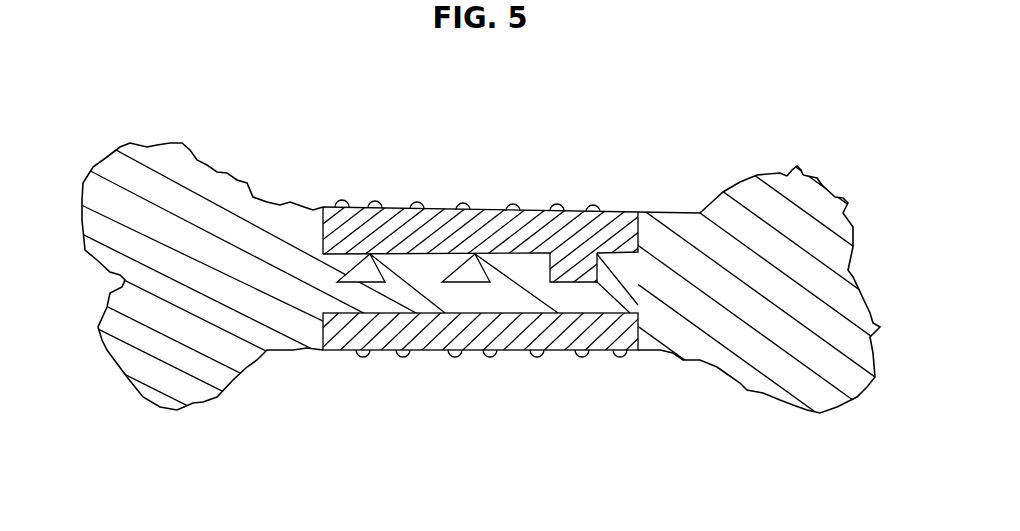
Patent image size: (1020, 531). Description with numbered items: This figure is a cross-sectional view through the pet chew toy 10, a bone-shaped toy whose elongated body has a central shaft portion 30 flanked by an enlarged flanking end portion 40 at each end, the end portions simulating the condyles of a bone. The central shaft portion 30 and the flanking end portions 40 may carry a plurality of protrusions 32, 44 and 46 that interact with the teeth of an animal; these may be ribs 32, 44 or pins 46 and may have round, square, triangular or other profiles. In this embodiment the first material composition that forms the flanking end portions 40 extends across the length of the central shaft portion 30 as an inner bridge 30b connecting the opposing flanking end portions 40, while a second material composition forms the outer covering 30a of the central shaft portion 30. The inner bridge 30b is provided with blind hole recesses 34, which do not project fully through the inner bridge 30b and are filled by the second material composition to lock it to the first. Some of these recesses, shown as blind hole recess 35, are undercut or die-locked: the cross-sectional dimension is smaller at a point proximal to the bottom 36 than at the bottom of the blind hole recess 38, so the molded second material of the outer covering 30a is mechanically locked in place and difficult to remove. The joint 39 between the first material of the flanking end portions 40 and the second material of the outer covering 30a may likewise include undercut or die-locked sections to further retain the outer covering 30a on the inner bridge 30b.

The pet chew toy 10 is at (262, 113).
The central shaft portion 30 is at (478, 388).
The outer covering 30a is at (520, 332).
The inner bridge 30b is at (622, 287).
The protrusions 32 is at (577, 313).
The blind hole recesses 34 is at (572, 262).
The blind hole recess 35 is at (473, 272).
The bottom of the blind hole recess 36 is at (357, 258).
The bottom of the blind hole recess 38 is at (373, 255).
The joint 39 is at (324, 250).
The flanking end portion 40 is at (785, 372).
The protrusions 44 is at (797, 168).
The protrusions 46 is at (863, 392).